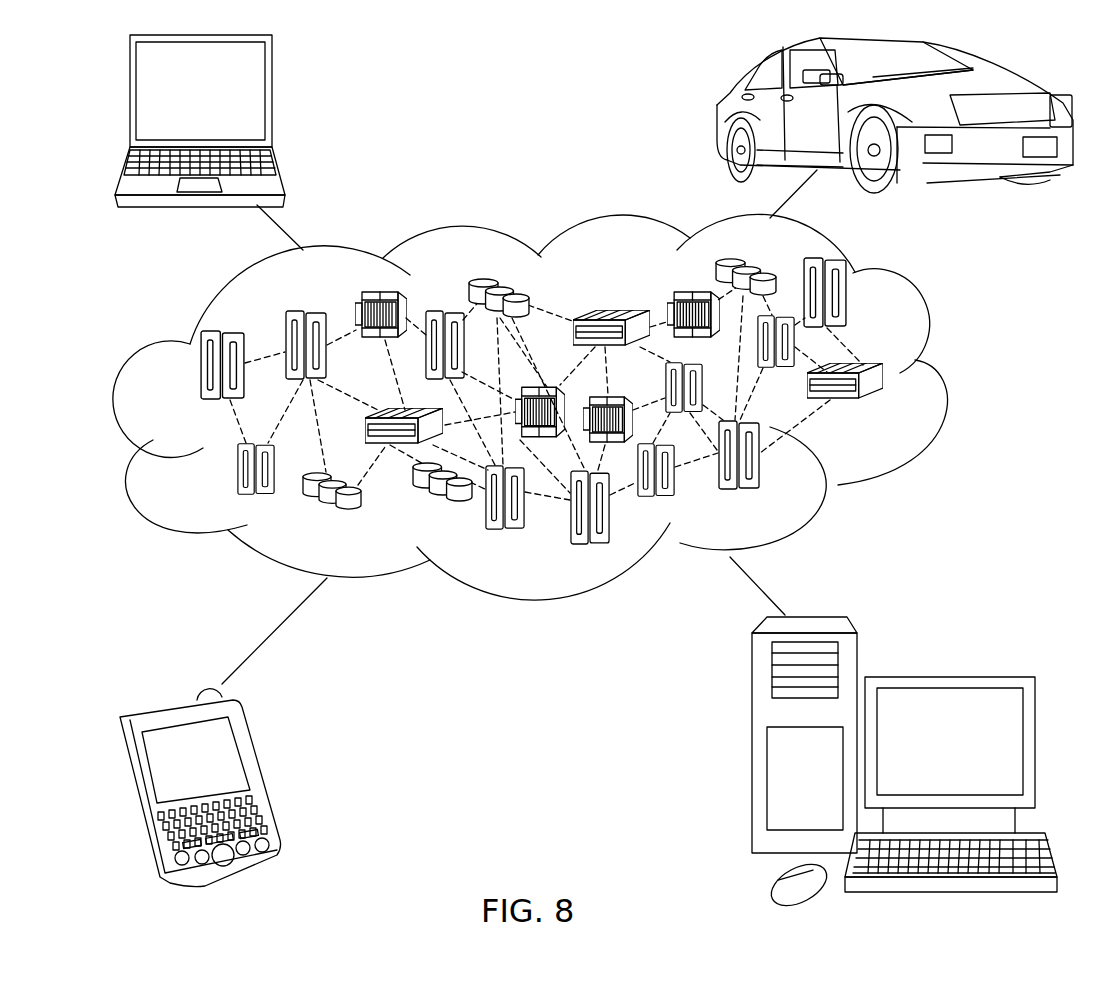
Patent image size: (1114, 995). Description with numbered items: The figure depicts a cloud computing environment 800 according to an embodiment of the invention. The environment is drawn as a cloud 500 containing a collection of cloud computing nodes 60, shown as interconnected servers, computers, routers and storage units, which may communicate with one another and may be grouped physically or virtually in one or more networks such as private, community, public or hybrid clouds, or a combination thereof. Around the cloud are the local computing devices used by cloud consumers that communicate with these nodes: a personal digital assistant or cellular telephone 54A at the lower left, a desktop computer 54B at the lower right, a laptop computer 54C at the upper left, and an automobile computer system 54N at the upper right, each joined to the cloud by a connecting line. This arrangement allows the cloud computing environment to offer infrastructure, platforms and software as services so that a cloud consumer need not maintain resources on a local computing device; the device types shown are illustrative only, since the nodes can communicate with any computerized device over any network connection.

The cloud computing environment 800 is at (568, 28).
The laptop computer 54C is at (272, 100).
The automobile computer system 54N is at (718, 112).
The personal digital assistant (PDA) or cellular telephone 54A is at (263, 773).
The desktop computer 54B is at (946, 677).
The cloud computing environment 500 is at (948, 388).
The cloud computing nodes 60 is at (893, 414).